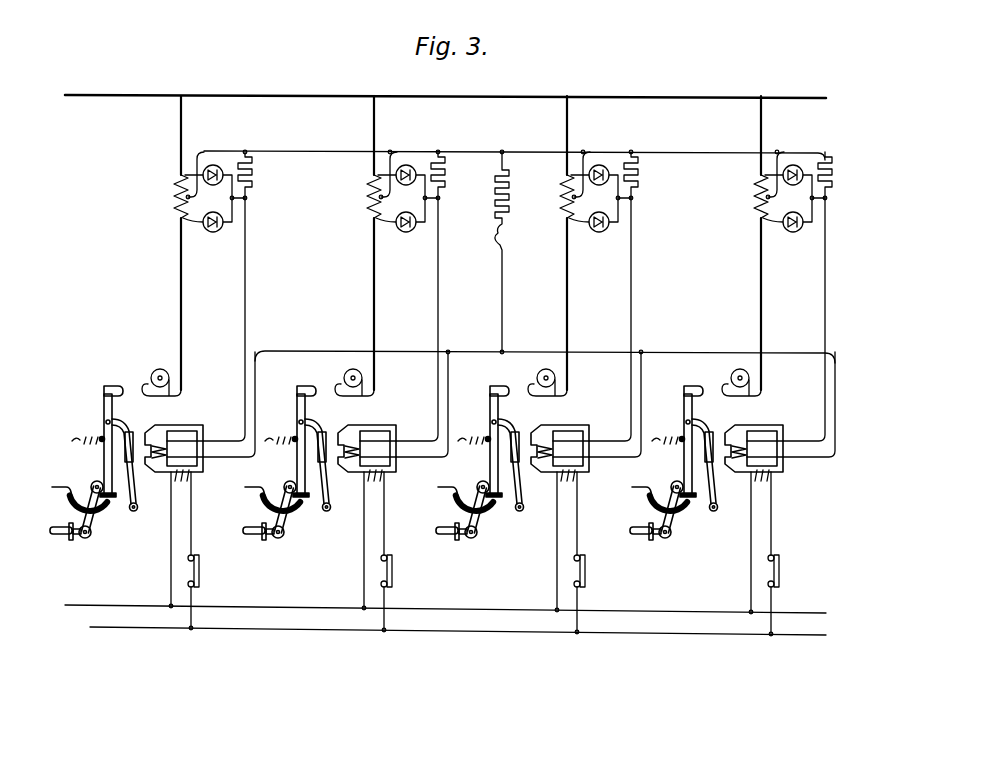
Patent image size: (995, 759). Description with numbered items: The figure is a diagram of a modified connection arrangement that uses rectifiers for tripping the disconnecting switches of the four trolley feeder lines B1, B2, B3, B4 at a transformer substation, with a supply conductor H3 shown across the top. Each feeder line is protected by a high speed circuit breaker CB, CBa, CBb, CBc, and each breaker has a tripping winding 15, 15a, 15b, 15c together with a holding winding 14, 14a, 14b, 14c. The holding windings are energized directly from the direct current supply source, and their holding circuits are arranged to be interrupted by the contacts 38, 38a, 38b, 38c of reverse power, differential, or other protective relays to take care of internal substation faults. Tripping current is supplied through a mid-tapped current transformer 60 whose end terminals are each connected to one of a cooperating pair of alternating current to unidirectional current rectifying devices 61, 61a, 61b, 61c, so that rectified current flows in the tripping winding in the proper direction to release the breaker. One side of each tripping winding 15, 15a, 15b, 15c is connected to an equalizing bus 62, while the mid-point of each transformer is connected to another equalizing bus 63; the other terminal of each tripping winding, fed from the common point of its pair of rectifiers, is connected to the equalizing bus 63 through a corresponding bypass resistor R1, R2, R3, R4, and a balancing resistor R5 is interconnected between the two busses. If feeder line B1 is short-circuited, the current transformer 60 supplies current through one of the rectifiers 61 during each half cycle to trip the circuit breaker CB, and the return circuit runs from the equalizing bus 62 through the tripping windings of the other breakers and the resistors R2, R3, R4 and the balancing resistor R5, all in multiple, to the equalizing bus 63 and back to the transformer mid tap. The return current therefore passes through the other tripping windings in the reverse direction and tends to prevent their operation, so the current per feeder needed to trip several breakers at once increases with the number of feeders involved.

The supply conductor H3 is at (634, 96).
The equalizing bus 63 is at (306, 151).
The equalizing bus 62 is at (673, 351).
The current transformer 60 is at (173, 193).
The rectifying devices 61 is at (211, 165).
The rectifying devices 61a is at (408, 179).
The rectifying devices 61b is at (601, 179).
The rectifying devices 61c is at (795, 179).
The bypass resistor R1 is at (257, 177).
The bypass resistor R2 is at (454, 174).
The bypass resistor R3 is at (649, 174).
The bypass resistor R4 is at (830, 165).
The balancing resistor R5 is at (511, 203).
The circuit breaker CB is at (105, 438).
The circuit breaker CBa is at (298, 438).
The circuit breaker CBb is at (491, 438).
The circuit breaker CBc is at (685, 438).
The feeder line B1 is at (102, 457).
The feeder line B2 is at (271, 499).
The feeder line B3 is at (464, 500).
The feeder line B4 is at (658, 500).
The tripping winding 15 is at (160, 449).
The tripping winding 15a is at (372, 434).
The tripping winding 15b is at (567, 434).
The tripping winding 15c is at (761, 435).
The holding winding 14 is at (187, 479).
The holding winding 14a is at (394, 489).
The holding winding 14b is at (587, 490).
The holding winding 14c is at (781, 491).
The contacts 38 is at (202, 570).
The contacts 38a is at (410, 571).
The contacts 38b is at (602, 571).
The contacts 38c is at (797, 571).